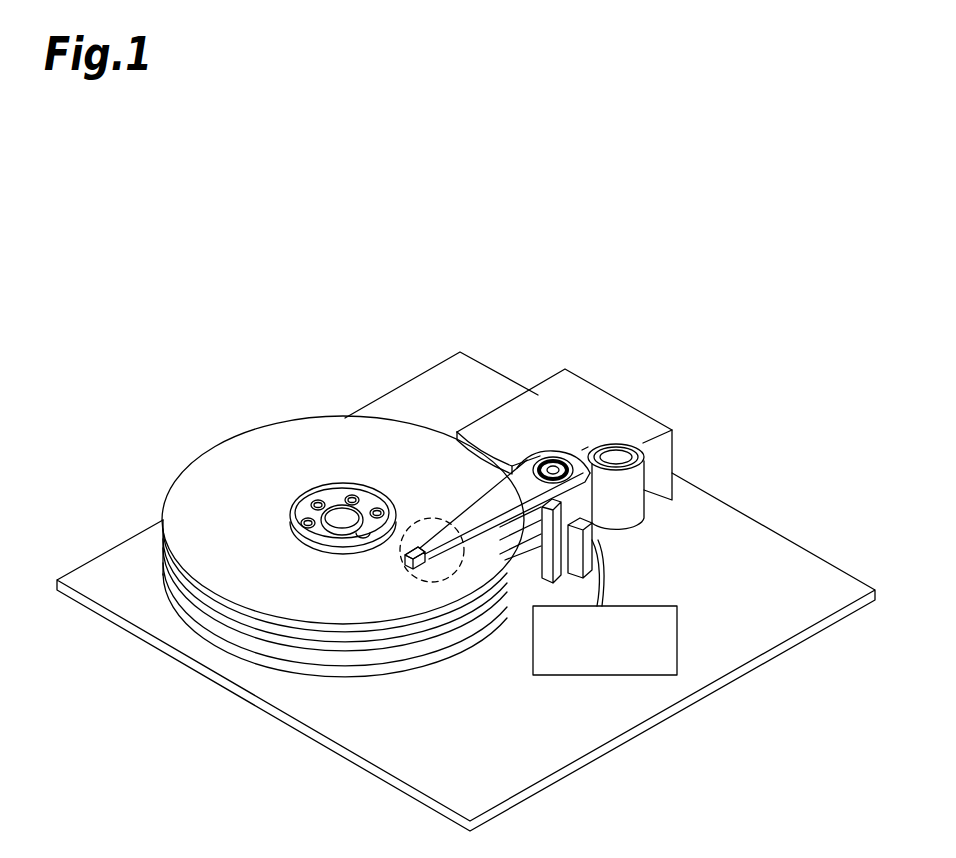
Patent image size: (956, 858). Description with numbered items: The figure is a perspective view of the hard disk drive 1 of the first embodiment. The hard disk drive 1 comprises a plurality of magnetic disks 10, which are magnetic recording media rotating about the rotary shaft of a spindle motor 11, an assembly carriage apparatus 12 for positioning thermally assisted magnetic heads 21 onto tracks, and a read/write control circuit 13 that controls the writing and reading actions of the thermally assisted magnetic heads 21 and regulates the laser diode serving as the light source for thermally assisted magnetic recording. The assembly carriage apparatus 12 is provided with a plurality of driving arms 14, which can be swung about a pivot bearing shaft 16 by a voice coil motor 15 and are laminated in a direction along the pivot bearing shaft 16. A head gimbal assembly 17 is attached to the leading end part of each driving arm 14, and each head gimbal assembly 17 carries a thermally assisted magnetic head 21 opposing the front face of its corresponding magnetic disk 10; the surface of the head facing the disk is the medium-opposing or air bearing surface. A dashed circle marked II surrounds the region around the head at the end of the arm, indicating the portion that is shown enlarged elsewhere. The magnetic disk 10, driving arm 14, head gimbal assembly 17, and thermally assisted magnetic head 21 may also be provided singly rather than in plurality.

The hard disk drive 1 is at (306, 300).
The magnetic disk 10 is at (230, 426).
The spindle motor 11 is at (340, 500).
The assembly carriage apparatus 12 is at (582, 396).
The read/write control circuit 13 is at (678, 641).
The driving arm 14 is at (472, 517).
The voice coil motor 15 is at (624, 493).
The pivot bearing shaft 16 is at (553, 462).
The head gimbal assembly 17 is at (434, 537).
The thermally assisted magnetic head 21 is at (425, 568).
The enlarged section region II is at (399, 557).